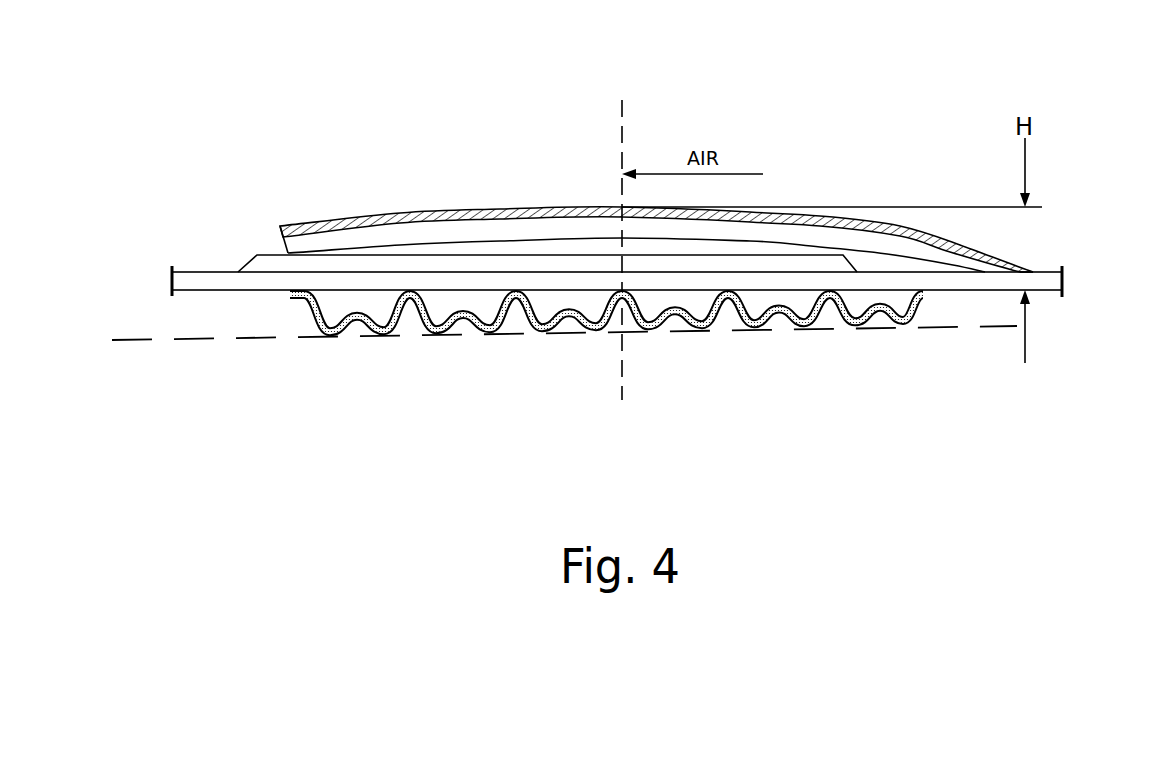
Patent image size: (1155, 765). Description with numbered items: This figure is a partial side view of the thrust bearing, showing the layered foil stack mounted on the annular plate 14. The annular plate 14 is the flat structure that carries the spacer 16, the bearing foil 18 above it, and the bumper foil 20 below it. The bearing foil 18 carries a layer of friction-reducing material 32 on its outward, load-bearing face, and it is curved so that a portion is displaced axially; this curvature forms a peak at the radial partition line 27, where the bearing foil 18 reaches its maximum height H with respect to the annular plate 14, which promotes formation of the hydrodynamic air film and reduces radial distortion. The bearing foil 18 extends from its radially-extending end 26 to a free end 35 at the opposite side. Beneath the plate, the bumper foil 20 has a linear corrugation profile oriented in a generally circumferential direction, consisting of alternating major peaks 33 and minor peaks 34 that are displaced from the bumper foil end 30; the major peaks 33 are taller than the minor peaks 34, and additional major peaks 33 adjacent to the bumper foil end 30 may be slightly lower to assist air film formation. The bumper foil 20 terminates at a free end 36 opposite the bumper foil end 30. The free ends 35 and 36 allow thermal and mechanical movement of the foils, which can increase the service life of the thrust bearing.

The annular plate 14 is at (182, 282).
The spacer 16 is at (432, 262).
The bearing foil 18 is at (313, 244).
The bumper foil 20 is at (604, 308).
The radially-extending end 26 is at (1031, 272).
The radial partition line 27 is at (634, 112).
The bumper foil end 30 is at (923, 292).
The friction-reducing material 32 is at (417, 212).
The major peak 33 is at (512, 290).
The minor peak 34 is at (460, 310).
The free end of bearing foil 35 is at (280, 241).
The free end of bumper foil 36 is at (285, 291).